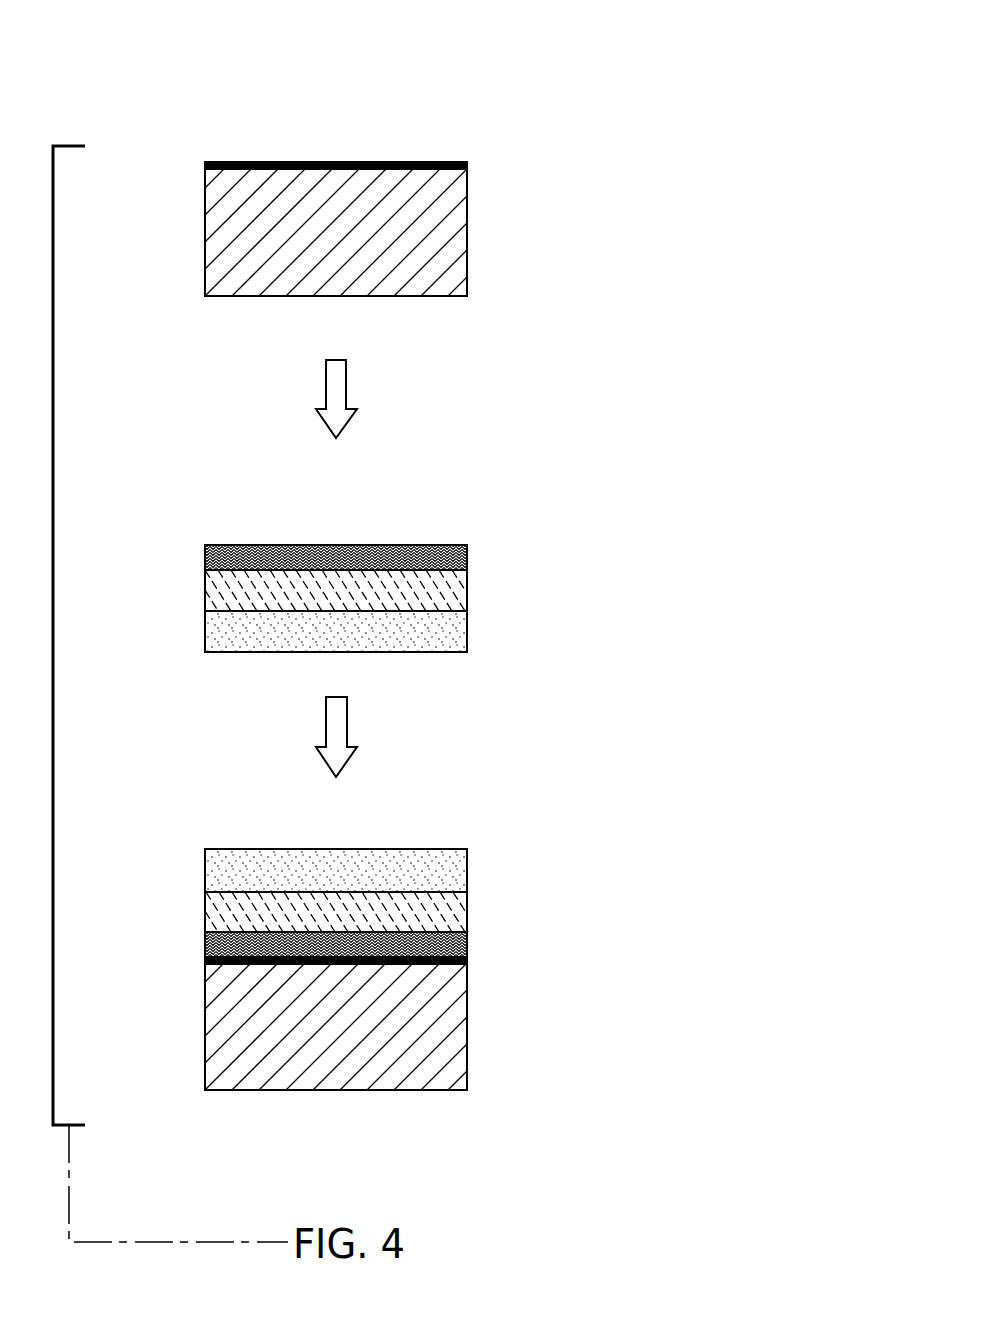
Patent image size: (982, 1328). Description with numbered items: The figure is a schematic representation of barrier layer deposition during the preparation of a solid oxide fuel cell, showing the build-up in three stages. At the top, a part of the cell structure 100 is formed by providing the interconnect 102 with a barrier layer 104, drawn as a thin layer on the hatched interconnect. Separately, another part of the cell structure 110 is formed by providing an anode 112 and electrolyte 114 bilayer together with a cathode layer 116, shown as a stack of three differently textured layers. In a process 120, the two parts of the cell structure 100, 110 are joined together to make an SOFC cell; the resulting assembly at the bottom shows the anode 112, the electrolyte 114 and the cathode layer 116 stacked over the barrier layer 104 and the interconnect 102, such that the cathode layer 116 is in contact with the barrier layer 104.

The part of the cell structure 100 is at (548, 46).
The interconnect 102 is at (462, 243).
The barrier layer 104 is at (467, 165).
The part of the cell structure 110 is at (548, 489).
The anode 112 is at (462, 630).
The electrolyte 114 is at (463, 597).
The cathode layer 116 is at (467, 557).
The process 120 is at (548, 802).